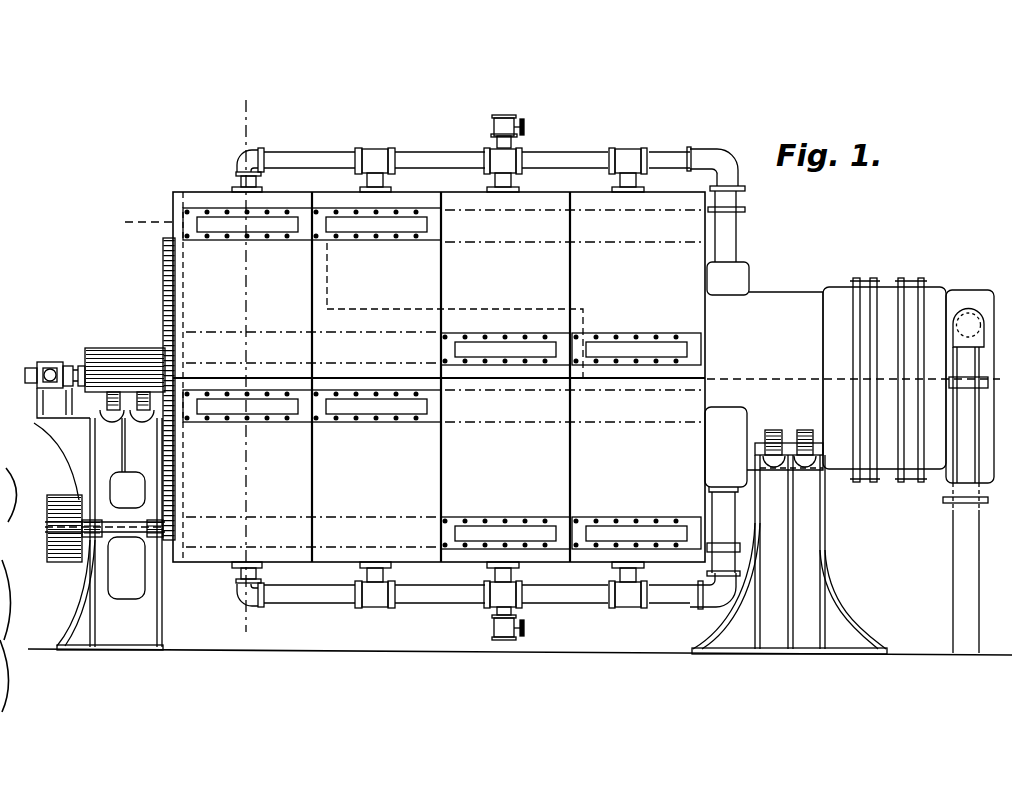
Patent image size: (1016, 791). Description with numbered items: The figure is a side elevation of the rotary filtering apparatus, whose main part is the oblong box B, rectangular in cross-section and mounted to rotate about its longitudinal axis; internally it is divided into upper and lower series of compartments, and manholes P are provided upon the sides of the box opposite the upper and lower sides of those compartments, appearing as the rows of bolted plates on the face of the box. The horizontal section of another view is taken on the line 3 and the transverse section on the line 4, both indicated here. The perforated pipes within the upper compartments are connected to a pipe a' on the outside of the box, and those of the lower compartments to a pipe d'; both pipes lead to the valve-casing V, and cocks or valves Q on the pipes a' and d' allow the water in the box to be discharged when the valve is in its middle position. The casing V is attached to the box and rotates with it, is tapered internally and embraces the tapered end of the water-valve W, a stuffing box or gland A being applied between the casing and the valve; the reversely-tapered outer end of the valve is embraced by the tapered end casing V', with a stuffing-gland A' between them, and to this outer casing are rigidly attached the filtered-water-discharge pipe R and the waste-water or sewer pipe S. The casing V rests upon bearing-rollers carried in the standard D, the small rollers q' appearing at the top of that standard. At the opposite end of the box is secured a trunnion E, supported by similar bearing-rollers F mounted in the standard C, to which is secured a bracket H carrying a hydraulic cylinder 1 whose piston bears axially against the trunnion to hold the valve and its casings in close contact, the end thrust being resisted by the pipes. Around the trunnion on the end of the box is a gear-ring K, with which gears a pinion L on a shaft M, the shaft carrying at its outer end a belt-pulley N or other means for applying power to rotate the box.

The oblong box B is at (537, 192).
The manholes P is at (442, 378).
The section line 4 4 is at (244, 365).
The section line 3 3 is at (557, 301).
The pipe a' is at (500, 348).
The pipe d' is at (504, 574).
The cocks or valves Q is at (475, 630).
The valve-casing V is at (785, 369).
The water-valve W is at (888, 293).
The stuffing box or gland A is at (857, 362).
The stuffing-gland A' is at (915, 358).
The end casing V' is at (972, 369).
The waste-water or sewer pipe S is at (968, 328).
The filtered-water-discharge pipe R is at (985, 481).
The standard D is at (825, 532).
The bearing pulleys q' is at (801, 463).
The gear-ring K is at (163, 262).
The trunnion E is at (110, 348).
The motor 1 is at (57, 379).
The bearing-rollers F is at (105, 412).
The bracket H is at (34, 423).
The pinion L is at (165, 562).
The standard C is at (127, 463).
The shaft M is at (126, 568).
The gear wheel N is at (105, 540).